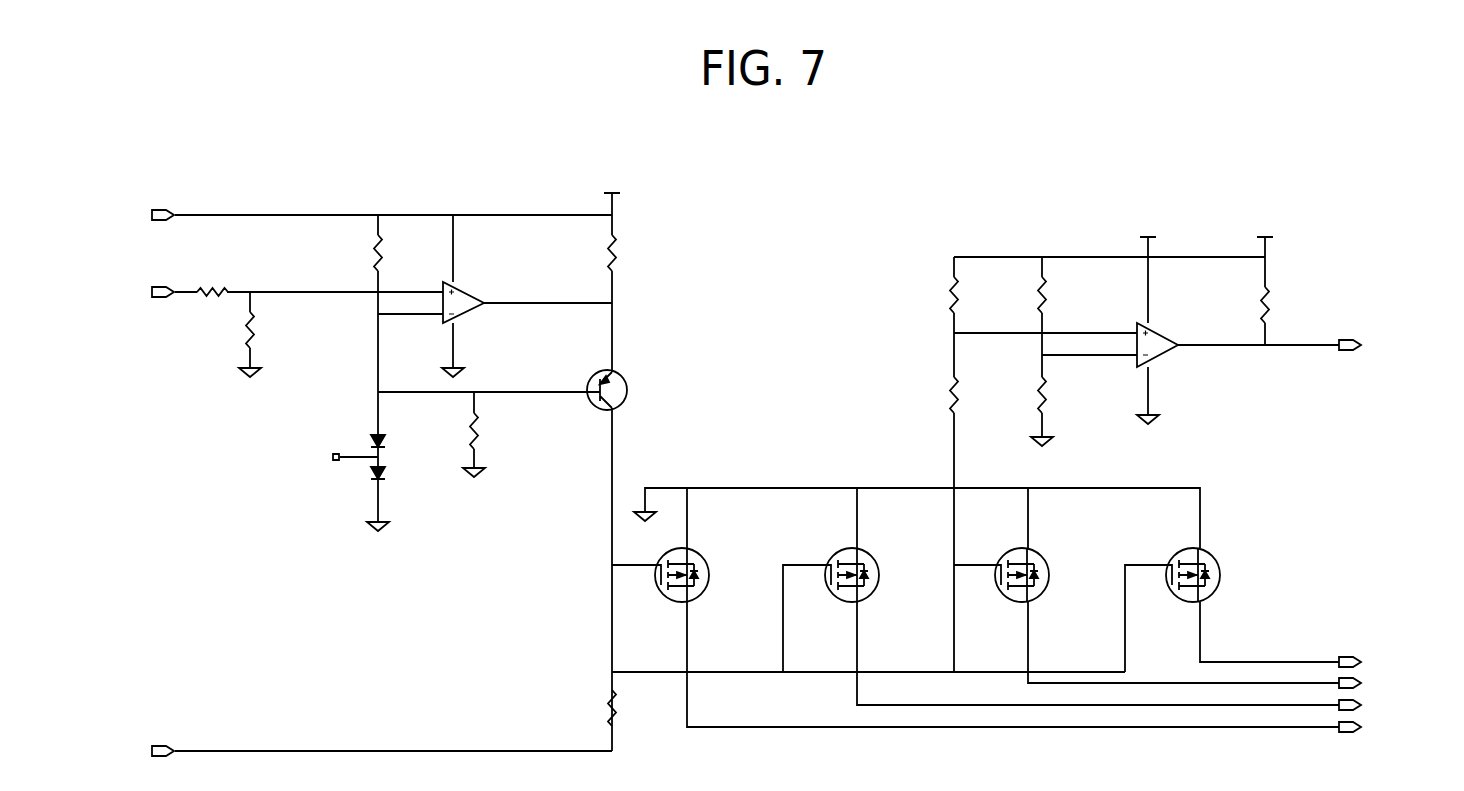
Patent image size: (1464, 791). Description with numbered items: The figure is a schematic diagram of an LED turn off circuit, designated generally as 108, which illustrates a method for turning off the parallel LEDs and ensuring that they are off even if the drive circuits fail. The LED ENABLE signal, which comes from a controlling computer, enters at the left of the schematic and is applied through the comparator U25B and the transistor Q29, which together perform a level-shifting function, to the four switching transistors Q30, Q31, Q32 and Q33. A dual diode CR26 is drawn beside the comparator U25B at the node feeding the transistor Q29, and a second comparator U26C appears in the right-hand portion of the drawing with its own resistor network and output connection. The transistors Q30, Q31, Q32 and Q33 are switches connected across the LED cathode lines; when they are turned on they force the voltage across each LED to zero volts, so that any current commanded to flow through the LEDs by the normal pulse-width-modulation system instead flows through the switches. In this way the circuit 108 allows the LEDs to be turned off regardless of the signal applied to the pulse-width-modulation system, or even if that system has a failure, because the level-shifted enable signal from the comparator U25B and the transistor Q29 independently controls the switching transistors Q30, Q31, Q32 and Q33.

The LED turn off circuit 108 is at (383, 162).
The comparator U25B is at (465, 300).
The comparator U26C is at (1158, 340).
The transistor Q29 is at (627, 390).
The transistor Q30 is at (696, 575).
The transistor Q31 is at (867, 575).
The transistor Q32 is at (1037, 575).
The transistor Q33 is at (1208, 575).
The dual diode MMBD7000LT1 CR26 is at (398, 455).